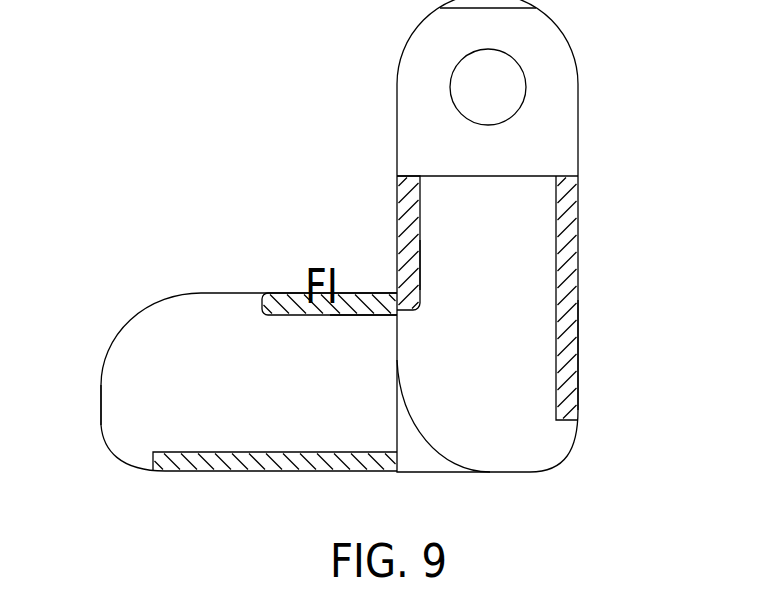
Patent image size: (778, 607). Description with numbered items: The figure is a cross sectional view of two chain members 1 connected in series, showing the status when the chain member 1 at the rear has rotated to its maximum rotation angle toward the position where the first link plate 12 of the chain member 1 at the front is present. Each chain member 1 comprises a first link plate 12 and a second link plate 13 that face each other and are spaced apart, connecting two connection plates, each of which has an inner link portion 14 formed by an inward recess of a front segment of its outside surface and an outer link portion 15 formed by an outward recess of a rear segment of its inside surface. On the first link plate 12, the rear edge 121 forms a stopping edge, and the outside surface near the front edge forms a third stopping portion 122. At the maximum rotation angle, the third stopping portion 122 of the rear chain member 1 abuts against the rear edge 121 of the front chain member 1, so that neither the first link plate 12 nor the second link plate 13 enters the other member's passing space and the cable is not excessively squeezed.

The chain member 1 is at (147, 288).
The first link plate 12 is at (295, 303).
The rear edge 121 is at (374, 302).
The third stopping portion 122 is at (397, 250).
The second link plate 13 is at (562, 262).
The inner link portion 14 is at (140, 348).
The outer link portion 15 is at (555, 96).